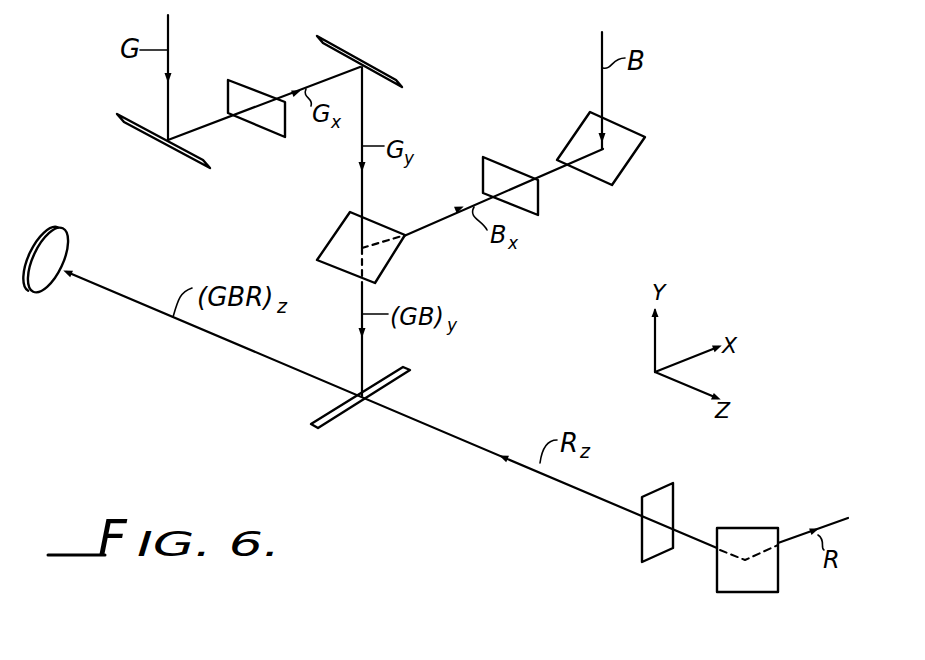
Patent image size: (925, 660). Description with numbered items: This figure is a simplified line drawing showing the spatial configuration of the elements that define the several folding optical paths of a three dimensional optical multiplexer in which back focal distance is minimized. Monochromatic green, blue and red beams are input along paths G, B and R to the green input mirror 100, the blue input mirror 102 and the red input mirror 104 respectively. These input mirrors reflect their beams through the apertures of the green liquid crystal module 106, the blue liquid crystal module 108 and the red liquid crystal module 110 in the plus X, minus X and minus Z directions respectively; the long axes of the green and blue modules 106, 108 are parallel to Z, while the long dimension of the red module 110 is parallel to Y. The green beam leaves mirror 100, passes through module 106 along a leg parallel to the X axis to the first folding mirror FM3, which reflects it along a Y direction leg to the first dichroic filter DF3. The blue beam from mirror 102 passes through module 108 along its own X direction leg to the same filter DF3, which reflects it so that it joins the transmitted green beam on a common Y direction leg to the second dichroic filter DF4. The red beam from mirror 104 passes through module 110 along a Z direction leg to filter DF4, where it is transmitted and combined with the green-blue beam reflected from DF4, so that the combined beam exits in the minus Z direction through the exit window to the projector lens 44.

The green input mirror 100 is at (117, 124).
The green liquid crystal module 106 is at (254, 53).
The first folding mirror FM3 is at (397, 77).
The blue input mirror 102 is at (637, 155).
The blue liquid crystal module 108 is at (539, 206).
The first dichroic filter DF3 is at (392, 259).
The second dichroic filter DF4 is at (333, 418).
The projector lens 44 is at (34, 293).
The red liquid crystal module 110 is at (673, 483).
The red input mirror 104 is at (748, 592).